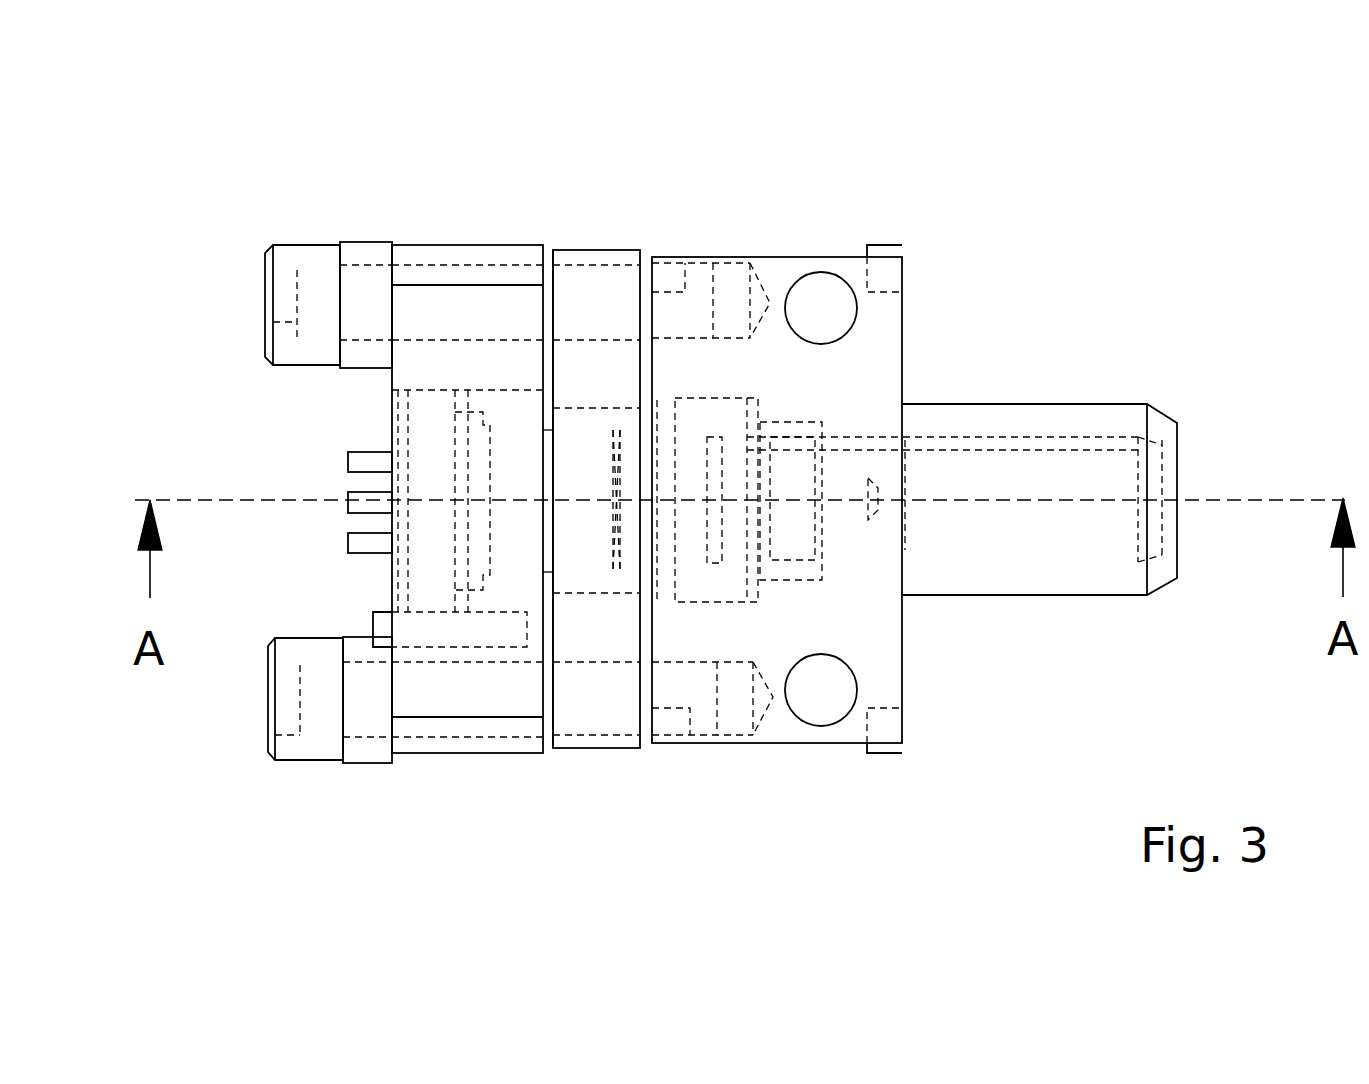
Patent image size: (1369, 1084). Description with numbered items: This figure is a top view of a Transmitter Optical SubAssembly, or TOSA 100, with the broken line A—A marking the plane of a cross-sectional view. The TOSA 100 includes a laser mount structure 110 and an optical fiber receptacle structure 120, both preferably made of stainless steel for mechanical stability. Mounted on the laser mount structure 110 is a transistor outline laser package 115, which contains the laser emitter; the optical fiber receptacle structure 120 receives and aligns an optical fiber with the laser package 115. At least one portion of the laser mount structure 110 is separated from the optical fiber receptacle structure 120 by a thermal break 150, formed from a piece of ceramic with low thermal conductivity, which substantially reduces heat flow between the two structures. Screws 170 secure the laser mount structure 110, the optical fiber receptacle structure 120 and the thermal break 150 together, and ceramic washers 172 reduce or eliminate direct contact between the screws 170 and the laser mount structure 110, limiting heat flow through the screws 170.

The Transmitter Optical SubAssembly (TOSA) 100 is at (97, 155).
The laser mount structure 110 is at (515, 247).
The transistor outline (TO) laser package 115 is at (322, 490).
The optical fiber receptacle structure 120 is at (808, 257).
The thermal break 150 is at (585, 252).
The screws 170 is at (297, 245).
The ceramic washers 172 is at (373, 242).